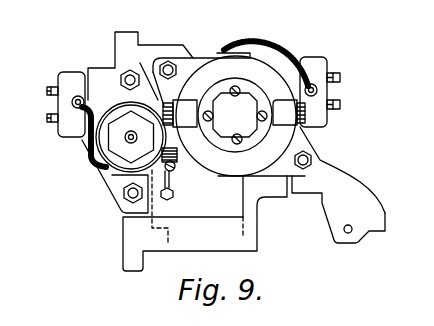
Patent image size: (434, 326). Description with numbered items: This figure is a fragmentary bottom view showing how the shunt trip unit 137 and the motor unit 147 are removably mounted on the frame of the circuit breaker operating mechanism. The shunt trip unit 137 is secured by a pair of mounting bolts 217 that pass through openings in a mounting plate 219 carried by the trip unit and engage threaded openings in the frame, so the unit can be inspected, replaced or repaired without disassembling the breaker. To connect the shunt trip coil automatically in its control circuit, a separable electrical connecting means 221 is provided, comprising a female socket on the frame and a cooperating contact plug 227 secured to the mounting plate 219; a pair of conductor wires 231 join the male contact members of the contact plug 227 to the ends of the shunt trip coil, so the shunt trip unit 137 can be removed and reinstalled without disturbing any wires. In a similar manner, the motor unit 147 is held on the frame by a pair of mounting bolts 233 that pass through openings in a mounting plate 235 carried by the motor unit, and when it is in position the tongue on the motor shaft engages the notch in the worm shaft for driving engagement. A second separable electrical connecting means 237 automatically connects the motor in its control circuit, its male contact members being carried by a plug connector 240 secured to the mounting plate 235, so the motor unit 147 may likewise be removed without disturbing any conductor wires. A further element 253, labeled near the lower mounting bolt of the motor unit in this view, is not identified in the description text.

The shunt trip unit 137 is at (115, 157).
The motor unit 147 is at (260, 67).
The mounting bolts 217 is at (130, 69).
The mounting plate 219 is at (107, 90).
The separable electrical connecting means 221 is at (47, 115).
The contact plug 227 is at (63, 69).
The conductor wires 231 is at (85, 148).
The mounting bolts 233 is at (168, 61).
The mounting plate 235 is at (207, 48).
The separable electrical connecting means 237 is at (392, 87).
The plug connector 240 is at (324, 67).
The mounting bolt 253 is at (313, 158).